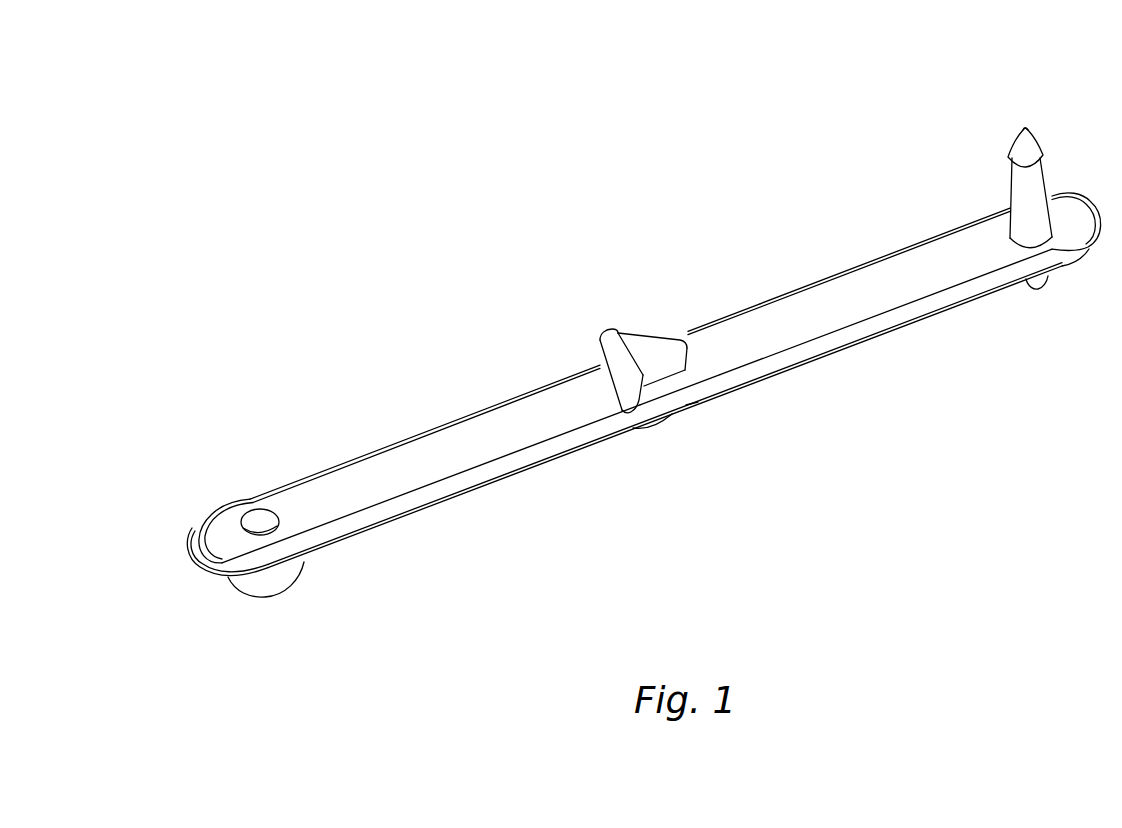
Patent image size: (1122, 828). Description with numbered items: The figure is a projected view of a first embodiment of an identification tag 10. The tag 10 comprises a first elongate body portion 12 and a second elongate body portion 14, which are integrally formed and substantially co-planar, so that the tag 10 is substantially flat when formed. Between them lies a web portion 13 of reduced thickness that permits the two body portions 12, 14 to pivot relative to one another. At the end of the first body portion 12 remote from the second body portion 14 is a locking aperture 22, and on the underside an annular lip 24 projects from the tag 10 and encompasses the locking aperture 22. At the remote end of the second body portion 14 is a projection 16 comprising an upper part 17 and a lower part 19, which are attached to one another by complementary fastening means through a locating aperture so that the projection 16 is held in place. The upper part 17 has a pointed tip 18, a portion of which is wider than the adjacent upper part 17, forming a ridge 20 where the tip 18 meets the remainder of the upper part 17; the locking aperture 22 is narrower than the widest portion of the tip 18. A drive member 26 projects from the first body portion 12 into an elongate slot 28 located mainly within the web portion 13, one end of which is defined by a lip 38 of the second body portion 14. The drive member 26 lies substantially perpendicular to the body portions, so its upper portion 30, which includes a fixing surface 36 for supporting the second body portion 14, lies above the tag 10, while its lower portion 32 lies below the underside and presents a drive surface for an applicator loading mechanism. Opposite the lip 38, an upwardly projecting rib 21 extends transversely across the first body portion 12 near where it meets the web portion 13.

The identification tag 10 is at (692, 180).
The first elongate body portion 12 is at (393, 470).
The web portion 13 is at (673, 400).
The second elongate body portion 14 is at (868, 285).
The projection 16 is at (1060, 180).
The upper part 17 is at (1020, 190).
The pointed tip 18 is at (1022, 137).
The lower part 19 is at (1042, 286).
The ridge 20 is at (1048, 154).
The rib 21 is at (602, 357).
The locking aperture 22 is at (254, 521).
The annular lip 24 is at (280, 584).
The drive member 26 is at (632, 322).
The elongate slot 28 is at (688, 363).
The upper portion 30 is at (652, 358).
The lower portion 32 is at (660, 425).
The fixing surface 36 is at (670, 334).
The lip 38 is at (688, 360).